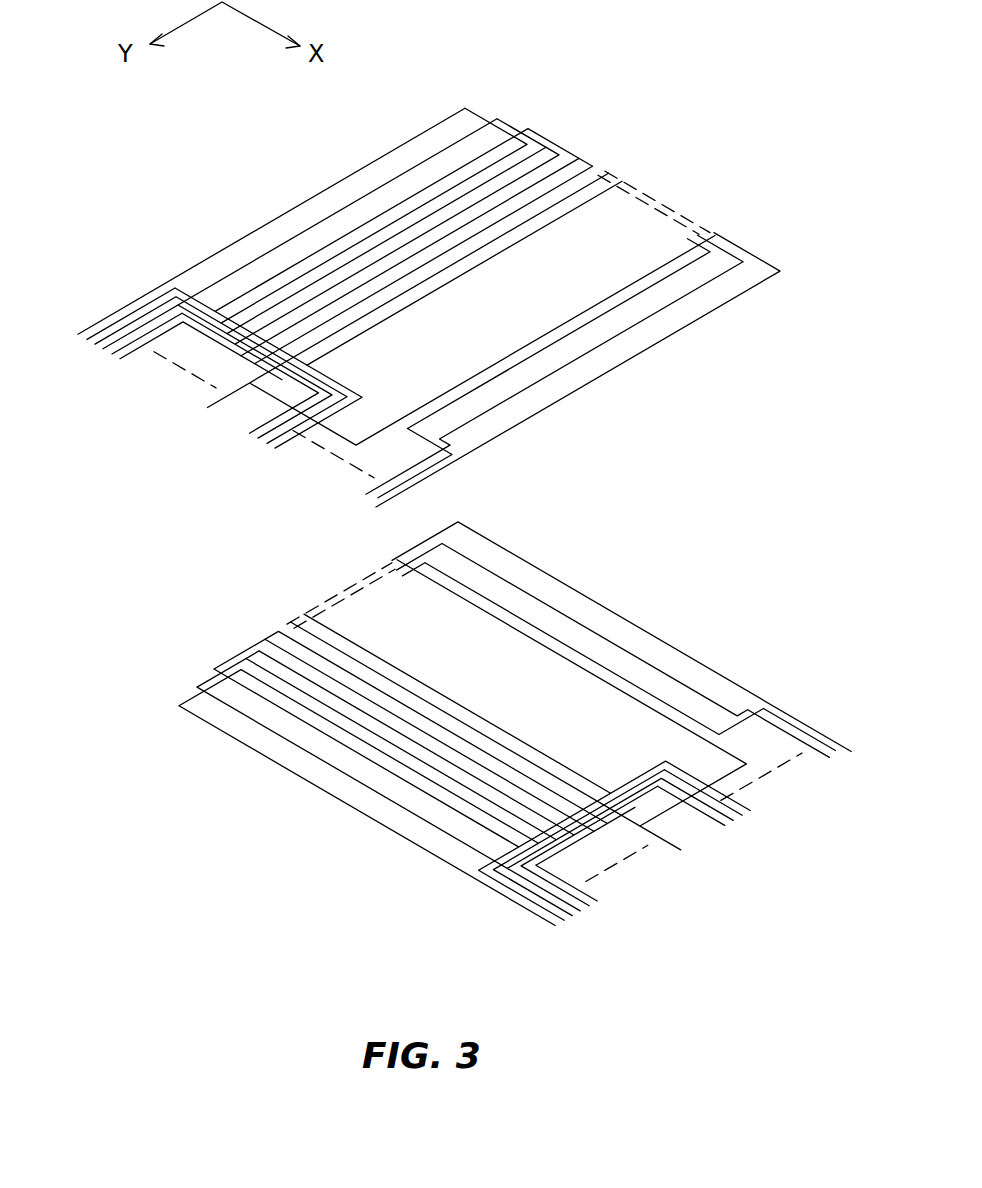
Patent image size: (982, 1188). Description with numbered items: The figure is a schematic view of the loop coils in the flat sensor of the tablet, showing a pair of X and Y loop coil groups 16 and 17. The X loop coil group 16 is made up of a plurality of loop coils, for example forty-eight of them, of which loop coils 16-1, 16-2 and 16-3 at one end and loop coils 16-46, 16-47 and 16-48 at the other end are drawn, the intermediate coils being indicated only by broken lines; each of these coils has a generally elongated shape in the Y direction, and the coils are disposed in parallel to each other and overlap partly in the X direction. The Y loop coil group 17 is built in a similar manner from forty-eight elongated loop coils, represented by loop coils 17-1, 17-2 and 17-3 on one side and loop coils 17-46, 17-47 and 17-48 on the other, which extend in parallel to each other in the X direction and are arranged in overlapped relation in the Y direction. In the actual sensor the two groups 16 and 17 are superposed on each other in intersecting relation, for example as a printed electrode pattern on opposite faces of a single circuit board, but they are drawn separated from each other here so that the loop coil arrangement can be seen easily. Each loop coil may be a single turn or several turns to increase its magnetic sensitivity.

The X loop coil group 16 is at (460, 282).
The loop coil 16-1 is at (398, 147).
The loop coil 16-2 is at (507, 122).
The loop coil 16-3 is at (572, 148).
The loop coil 16-46 is at (602, 315).
The loop coil 16-47 is at (667, 310).
The loop coil 16-48 is at (730, 298).
The Y loop coil group 17 is at (457, 721).
The loop coil 17-1 is at (220, 728).
The loop coil 17-2 is at (205, 675).
The loop coil 17-3 is at (235, 640).
The loop coil 17-46 is at (596, 660).
The loop coil 17-47 is at (540, 597).
The loop coil 17-48 is at (512, 545).